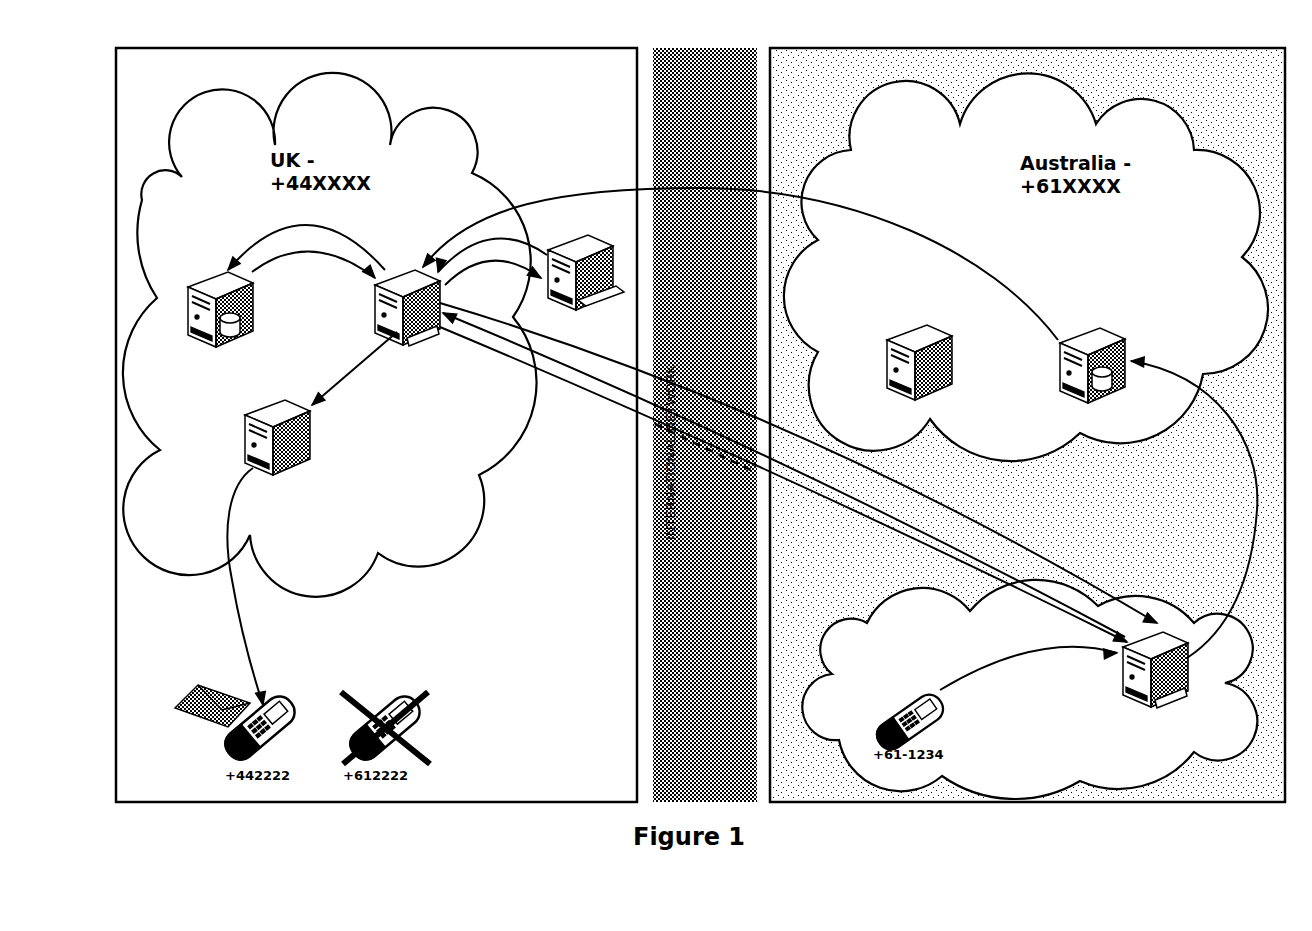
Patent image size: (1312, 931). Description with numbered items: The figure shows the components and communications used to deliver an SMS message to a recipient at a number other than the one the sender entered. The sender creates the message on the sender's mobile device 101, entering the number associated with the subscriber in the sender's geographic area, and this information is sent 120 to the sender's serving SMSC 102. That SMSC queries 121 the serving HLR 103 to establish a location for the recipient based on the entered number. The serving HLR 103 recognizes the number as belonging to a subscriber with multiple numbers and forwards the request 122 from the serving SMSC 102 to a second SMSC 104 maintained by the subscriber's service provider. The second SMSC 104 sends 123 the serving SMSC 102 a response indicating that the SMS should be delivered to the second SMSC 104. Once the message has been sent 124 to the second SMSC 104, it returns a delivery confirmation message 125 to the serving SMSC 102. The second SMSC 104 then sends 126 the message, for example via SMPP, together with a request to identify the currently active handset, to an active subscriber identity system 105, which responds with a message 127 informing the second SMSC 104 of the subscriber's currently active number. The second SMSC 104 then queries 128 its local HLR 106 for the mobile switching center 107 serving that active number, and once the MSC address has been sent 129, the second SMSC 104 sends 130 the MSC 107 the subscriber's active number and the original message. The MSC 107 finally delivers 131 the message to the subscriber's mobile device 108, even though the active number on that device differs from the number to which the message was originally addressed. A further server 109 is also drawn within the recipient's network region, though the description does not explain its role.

The sender's mobile device 101 is at (910, 716).
The sender's serving SMSC 102 is at (1137, 670).
The serving HLR 103 is at (1100, 357).
The second SMSC 104 is at (387, 308).
The active subscriber identity system 105 is at (586, 262).
The local HLR 106 is at (234, 309).
The mobile switching center 107 is at (258, 437).
The subscriber's mobile device 108 is at (243, 728).
The Australian network server 109 is at (919, 349).
The sending of message information 120 is at (1028, 668).
The query to serving HLR 121 is at (1208, 507).
The forwarded request 122 is at (740, 255).
The response to query 123 is at (798, 463).
The sending of message to second SMSC 124 is at (784, 475).
The delivery confirmation message 125 is at (783, 484).
The sending of message and handset identification request 126 is at (493, 278).
The active number response message 127 is at (491, 250).
The query to local HLR 128 is at (306, 238).
The sending of MSC address 129 is at (313, 257).
The sending of active number and message to MSC 130 is at (354, 368).
The message delivery 131 is at (231, 586).